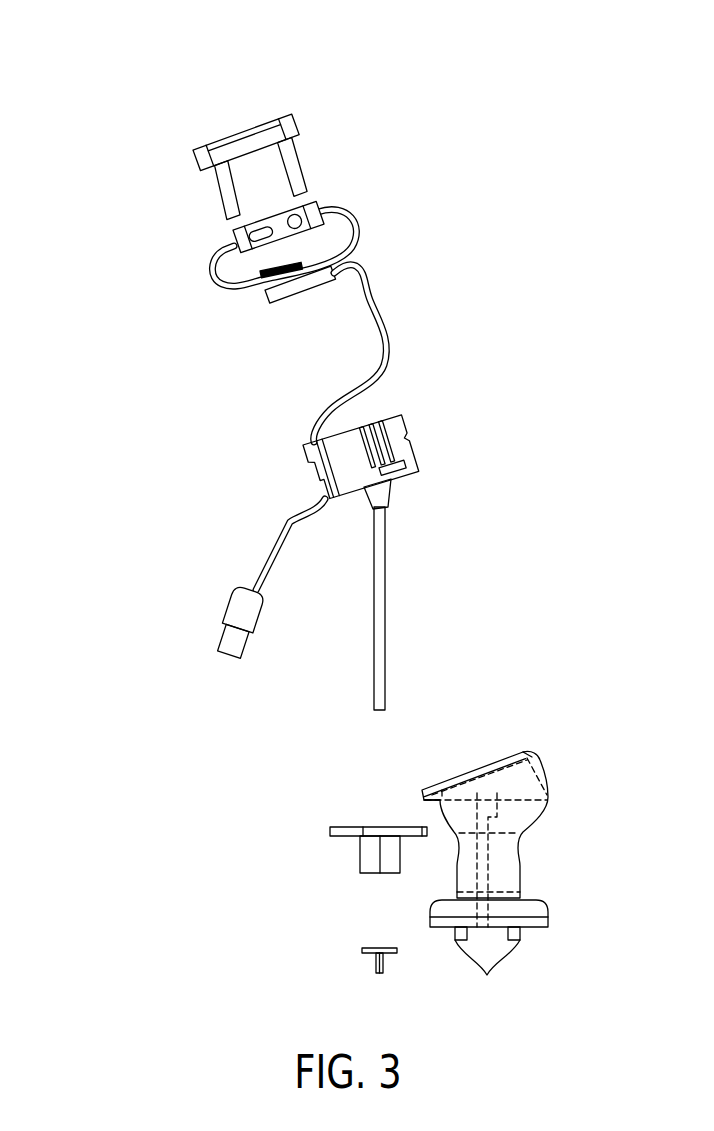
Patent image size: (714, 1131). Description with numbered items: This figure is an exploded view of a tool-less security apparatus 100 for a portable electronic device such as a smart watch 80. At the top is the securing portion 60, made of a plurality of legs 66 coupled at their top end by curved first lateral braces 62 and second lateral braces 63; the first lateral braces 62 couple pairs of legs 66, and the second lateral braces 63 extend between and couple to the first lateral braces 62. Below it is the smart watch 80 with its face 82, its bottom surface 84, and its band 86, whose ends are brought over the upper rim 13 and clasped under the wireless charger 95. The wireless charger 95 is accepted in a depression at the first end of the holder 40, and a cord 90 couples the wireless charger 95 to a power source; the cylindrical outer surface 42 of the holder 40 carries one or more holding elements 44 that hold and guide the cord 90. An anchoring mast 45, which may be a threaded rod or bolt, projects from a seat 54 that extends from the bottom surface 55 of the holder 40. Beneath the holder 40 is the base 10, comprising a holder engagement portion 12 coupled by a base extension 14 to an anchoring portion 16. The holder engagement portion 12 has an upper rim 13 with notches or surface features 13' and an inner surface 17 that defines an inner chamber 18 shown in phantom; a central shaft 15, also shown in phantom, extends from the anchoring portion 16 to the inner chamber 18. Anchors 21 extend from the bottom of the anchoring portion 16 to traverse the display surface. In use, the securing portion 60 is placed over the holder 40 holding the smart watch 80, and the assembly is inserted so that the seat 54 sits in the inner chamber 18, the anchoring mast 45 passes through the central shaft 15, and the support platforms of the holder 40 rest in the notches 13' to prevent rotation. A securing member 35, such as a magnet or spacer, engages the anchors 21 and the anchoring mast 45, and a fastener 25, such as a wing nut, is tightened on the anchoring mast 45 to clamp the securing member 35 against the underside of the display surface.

The tool-less security apparatus 100 is at (83, 75).
The securing portion 60 is at (318, 141).
The first lateral brace 62 is at (246, 142).
The second lateral brace 63 is at (205, 159).
The leg 66 is at (224, 204).
The smart watch 80 is at (220, 239).
The face 82 is at (323, 212).
The bottom surface of the watch 84 is at (252, 277).
The band 86 is at (211, 272).
The cord 90 is at (384, 322).
The wireless charger 95 is at (303, 293).
The holder 40 is at (421, 434).
The outer surface 42 is at (408, 441).
The holding element 44 is at (303, 456).
The anchoring mast 45 is at (379, 589).
The seat 54 is at (390, 498).
The bottom surface of the holder 55 is at (412, 472).
The base 10 is at (605, 812).
The holder engagement portion 12 is at (552, 764).
The upper rim 13 is at (403, 802).
The surface features 13' is at (479, 744).
The base extension 14 is at (530, 845).
The central shaft 15 is at (500, 863).
The anchoring portion 16 is at (565, 918).
The inner surface 17 is at (527, 752).
The inner chamber 18 is at (475, 770).
The anchor 21 is at (487, 971).
The fastener 25 is at (367, 953).
The securing member 35 is at (358, 850).